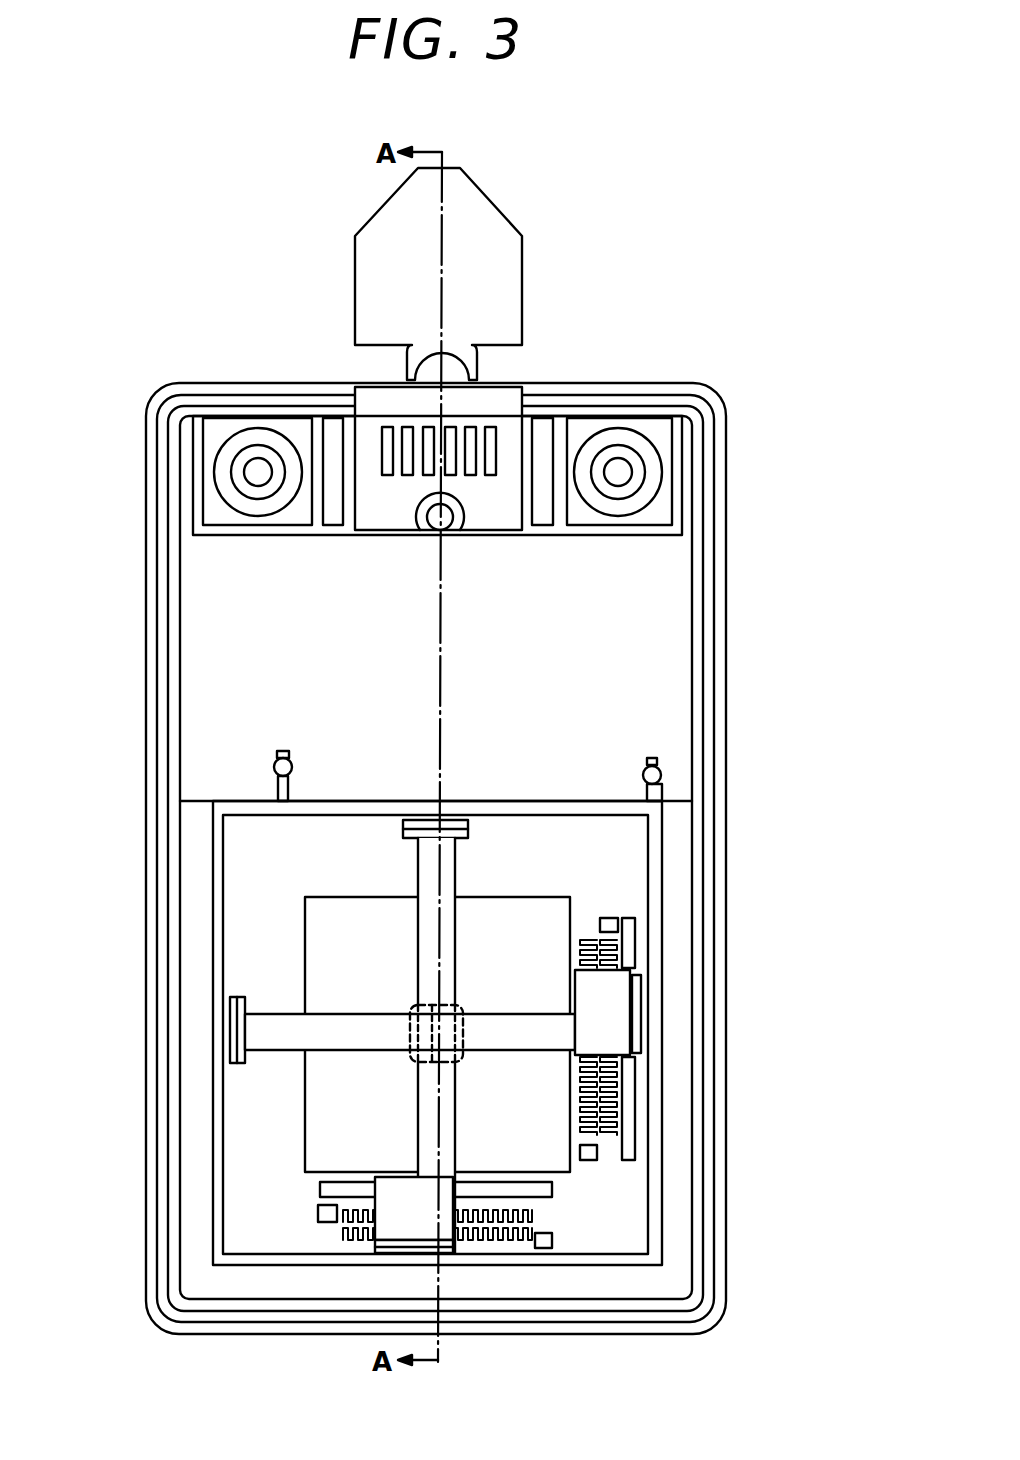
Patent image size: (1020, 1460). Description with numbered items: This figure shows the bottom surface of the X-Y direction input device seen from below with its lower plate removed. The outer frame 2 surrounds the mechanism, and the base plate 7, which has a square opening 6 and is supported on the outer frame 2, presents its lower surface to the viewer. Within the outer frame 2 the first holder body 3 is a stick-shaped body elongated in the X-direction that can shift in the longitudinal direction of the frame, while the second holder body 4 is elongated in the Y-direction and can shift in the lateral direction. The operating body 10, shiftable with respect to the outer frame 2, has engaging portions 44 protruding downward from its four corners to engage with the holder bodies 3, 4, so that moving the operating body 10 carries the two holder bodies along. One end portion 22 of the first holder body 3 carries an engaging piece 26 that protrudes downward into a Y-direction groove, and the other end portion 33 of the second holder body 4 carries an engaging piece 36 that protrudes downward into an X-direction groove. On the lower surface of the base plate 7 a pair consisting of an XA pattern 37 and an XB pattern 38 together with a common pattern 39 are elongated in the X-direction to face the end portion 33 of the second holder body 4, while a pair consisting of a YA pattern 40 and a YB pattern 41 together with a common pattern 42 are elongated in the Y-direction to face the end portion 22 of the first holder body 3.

The outer frame 2 is at (722, 630).
The first holder body 3 is at (272, 1012).
The second holder body 4 is at (455, 1125).
The square opening 6 is at (557, 1160).
The base plate 7 is at (637, 835).
The operating body 10 is at (392, 1055).
The end portion 22 is at (608, 1035).
The engaging piece 26 is at (640, 1040).
The end portion 33 is at (475, 1235).
The engaging piece 36 is at (441, 1244).
The XA pattern 37 is at (343, 1218).
The XB pattern 38 is at (358, 1243).
The common pattern 39 is at (320, 1188).
The YA pattern 40 is at (588, 943).
The YB pattern 41 is at (618, 945).
The common pattern 42 is at (632, 962).
The engaging portions 44 is at (413, 1058).